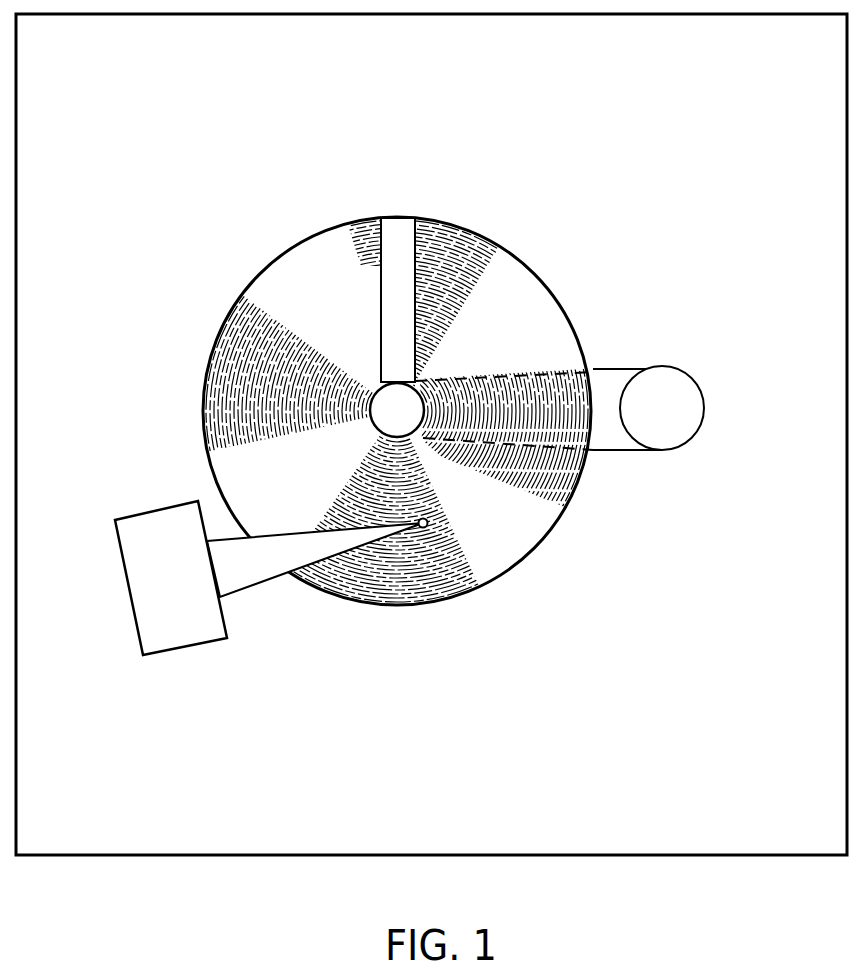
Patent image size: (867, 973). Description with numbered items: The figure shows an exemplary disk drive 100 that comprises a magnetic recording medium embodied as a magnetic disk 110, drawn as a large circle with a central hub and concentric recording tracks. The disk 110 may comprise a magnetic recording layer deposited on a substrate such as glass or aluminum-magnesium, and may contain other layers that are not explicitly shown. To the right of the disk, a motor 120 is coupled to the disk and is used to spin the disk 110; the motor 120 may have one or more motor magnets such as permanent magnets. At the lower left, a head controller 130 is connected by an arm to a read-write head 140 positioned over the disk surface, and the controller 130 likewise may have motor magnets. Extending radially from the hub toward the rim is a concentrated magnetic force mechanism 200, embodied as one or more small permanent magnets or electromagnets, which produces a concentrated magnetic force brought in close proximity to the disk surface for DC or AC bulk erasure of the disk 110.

The disk drive 100 is at (65, 78).
The magnetic disk 110 is at (483, 573).
The motor 120 is at (664, 437).
The head controller 130 is at (193, 638).
The read-write head 140 is at (428, 521).
The concentrated magnetic force mechanism 200 is at (398, 226).